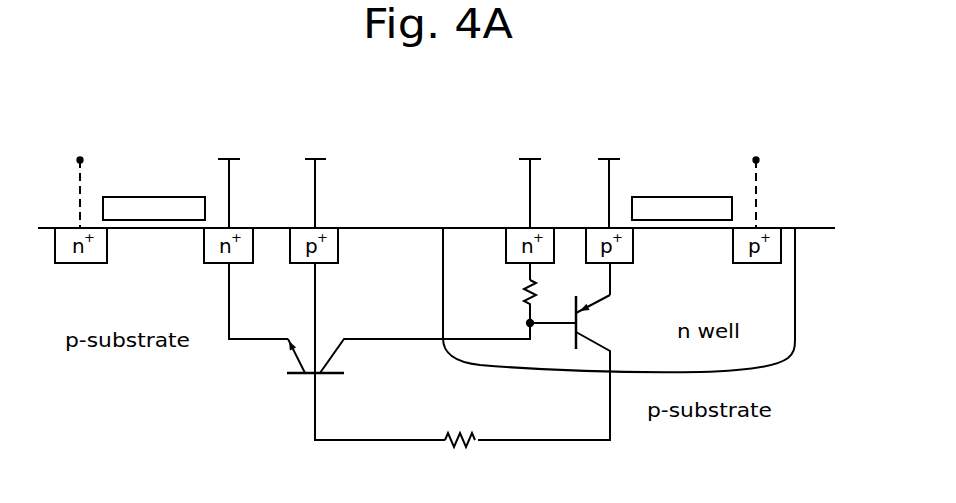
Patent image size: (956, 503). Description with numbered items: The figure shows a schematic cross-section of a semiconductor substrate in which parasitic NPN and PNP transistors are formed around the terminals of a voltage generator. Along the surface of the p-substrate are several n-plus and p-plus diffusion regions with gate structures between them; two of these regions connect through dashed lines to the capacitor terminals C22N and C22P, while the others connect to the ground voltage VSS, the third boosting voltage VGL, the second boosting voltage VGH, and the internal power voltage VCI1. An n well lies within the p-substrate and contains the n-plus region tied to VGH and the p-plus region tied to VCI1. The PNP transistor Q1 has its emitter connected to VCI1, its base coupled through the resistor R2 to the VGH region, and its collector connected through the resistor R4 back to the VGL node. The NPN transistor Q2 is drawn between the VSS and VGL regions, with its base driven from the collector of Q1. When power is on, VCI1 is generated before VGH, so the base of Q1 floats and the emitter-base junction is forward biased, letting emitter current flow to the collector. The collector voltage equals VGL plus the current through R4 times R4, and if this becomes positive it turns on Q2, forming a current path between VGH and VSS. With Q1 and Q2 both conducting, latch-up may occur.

The terminal C22N is at (79, 180).
The terminal C22P is at (755, 180).
The ground voltage VSS is at (249, 236).
The third boosting voltage VGL is at (371, 286).
The second boosting voltage VGH is at (529, 206).
The internal power voltage VCI1 is at (607, 214).
The resistor R2 is at (514, 303).
The resistor R4 is at (460, 453).
The PNP transistor Q1 is at (553, 367).
The NPN transistor Q2 is at (408, 363).